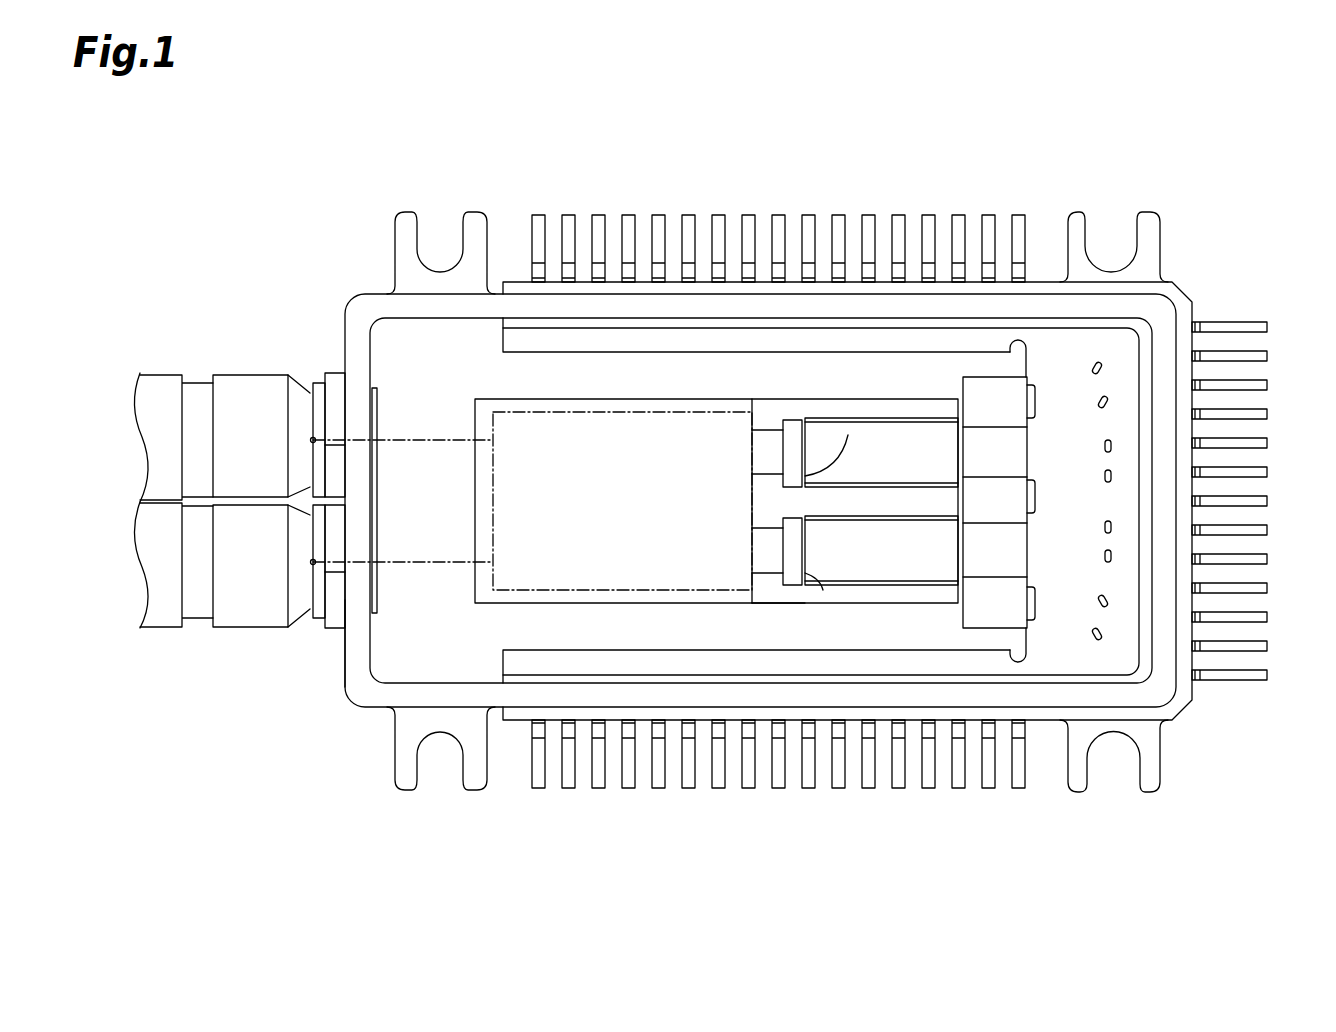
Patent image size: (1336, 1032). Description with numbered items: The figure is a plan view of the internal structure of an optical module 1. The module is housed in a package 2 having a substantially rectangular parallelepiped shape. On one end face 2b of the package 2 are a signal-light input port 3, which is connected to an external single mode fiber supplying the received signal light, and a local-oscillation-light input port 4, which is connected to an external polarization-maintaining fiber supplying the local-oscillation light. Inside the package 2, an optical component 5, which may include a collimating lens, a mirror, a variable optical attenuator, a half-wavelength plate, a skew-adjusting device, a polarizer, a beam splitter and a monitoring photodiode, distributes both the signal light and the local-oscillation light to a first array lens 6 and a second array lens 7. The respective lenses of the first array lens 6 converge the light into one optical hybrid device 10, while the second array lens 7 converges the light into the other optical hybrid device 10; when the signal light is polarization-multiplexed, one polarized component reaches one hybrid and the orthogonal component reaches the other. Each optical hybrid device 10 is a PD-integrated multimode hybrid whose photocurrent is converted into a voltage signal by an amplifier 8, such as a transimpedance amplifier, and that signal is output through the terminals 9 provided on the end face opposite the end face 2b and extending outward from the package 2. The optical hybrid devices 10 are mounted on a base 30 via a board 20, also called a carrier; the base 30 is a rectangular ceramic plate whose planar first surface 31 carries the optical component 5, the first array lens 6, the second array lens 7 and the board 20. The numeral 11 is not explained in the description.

The optical module 1 is at (1043, 133).
The package 2 is at (1188, 287).
The one end face 2b is at (345, 662).
The signal-light input port 3 is at (250, 390).
The local-oscillation-light input port 4 is at (251, 612).
The optical component 5 is at (522, 590).
The first array lens 6 is at (793, 420).
The second array lens 7 is at (793, 586).
The amplifier 8 is at (1005, 451).
The terminals 9 is at (1267, 327).
The optical hybrid device 10 is at (869, 444).
The optical fiber 11 is at (848, 435).
The board 20 is at (918, 413).
The base 30 is at (905, 604).
The first surface 31 is at (767, 595).